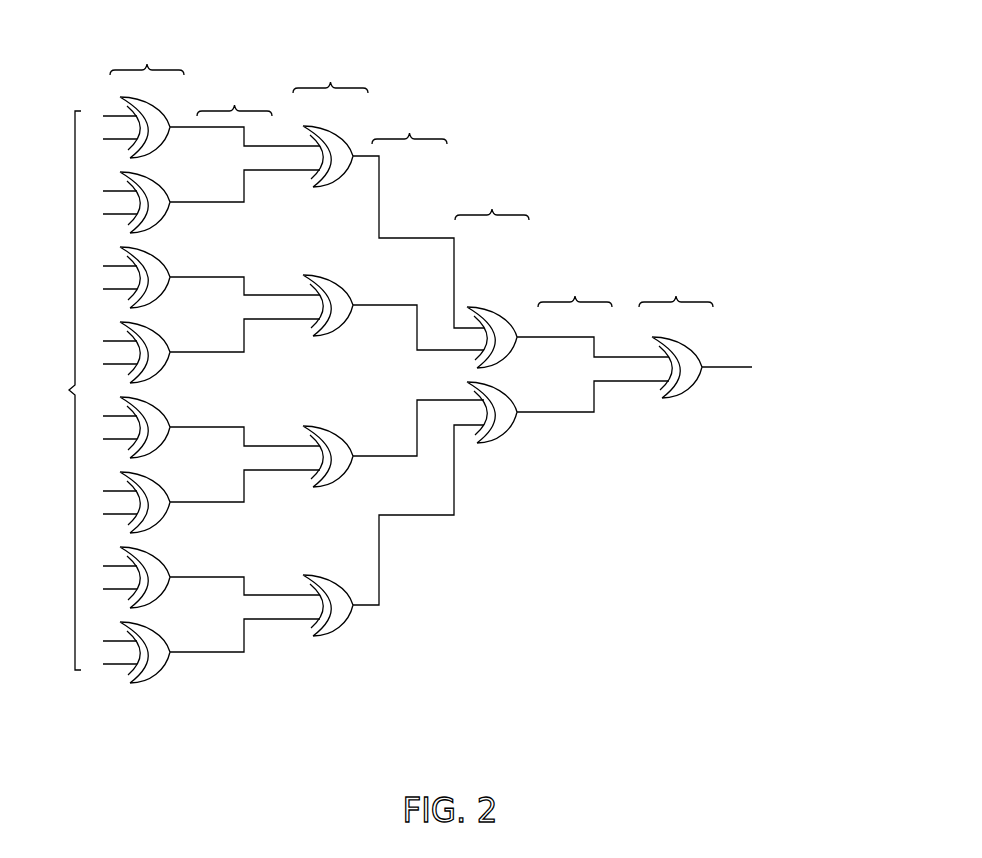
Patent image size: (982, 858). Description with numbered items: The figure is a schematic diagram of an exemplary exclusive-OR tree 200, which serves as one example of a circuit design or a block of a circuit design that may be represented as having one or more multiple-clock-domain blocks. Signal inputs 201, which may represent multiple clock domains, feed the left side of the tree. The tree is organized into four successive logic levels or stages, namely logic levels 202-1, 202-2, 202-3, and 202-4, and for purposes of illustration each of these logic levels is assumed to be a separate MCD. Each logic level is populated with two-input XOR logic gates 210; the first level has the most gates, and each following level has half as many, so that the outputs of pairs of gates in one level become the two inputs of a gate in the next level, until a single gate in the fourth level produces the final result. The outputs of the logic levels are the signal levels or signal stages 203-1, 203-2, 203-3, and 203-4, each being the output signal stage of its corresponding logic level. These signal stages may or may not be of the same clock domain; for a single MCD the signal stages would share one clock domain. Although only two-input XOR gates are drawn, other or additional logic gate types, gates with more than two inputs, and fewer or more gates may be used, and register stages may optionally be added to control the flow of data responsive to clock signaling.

The XOR tree 200 is at (738, 31).
The signal inputs 201 is at (79, 390).
The first logic level 202-1 is at (147, 321).
The second logic level 202-2 is at (330, 269).
The third logic level 202-3 is at (492, 273).
The fourth logic level 202-4 is at (676, 332).
The first signal level 203-1 is at (245, 363).
The second signal level 203-2 is at (418, 355).
The third signal level 203-3 is at (593, 339).
The fourth signal level 203-4 is at (752, 366).
The XOR logic gate 210 is at (172, 663).